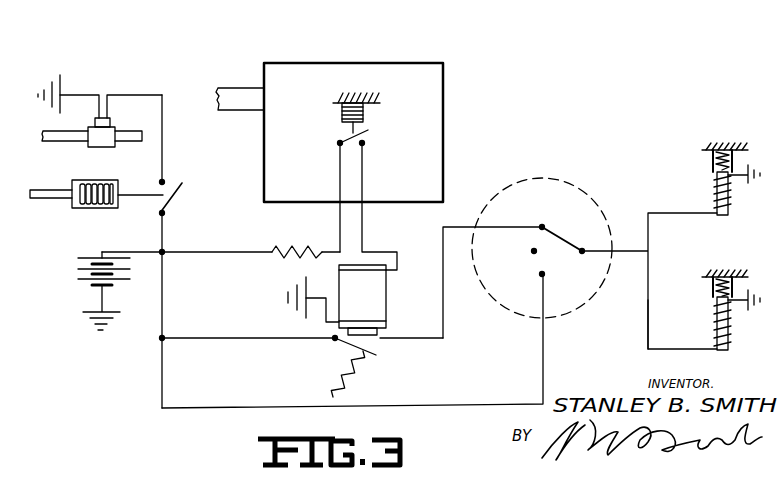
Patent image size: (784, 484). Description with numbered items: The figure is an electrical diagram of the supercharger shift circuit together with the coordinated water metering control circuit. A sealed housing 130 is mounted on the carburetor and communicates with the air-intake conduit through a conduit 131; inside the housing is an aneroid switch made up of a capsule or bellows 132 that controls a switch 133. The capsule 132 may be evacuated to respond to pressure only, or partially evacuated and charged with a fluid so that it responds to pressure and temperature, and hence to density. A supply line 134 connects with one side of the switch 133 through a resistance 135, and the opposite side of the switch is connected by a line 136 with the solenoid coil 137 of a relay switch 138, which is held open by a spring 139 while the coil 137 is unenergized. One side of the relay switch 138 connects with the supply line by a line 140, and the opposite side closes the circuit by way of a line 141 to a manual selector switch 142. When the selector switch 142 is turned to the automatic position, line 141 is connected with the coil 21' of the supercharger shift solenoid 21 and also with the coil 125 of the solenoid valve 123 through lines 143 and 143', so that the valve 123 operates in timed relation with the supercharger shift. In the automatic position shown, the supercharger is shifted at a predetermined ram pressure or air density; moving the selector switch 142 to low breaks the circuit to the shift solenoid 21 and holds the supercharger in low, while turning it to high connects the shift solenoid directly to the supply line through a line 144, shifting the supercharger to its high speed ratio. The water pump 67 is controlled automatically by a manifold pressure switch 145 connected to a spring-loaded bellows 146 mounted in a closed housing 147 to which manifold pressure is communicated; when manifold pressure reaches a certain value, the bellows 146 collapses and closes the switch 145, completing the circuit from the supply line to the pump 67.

The water pump 67 is at (98, 137).
The spring-loaded bellows 146 is at (97, 186).
The closed housing 147 is at (92, 208).
The manifold pressure switch 145 is at (180, 196).
The supply line 134 is at (209, 251).
The resistance 135 is at (311, 224).
The sealed housing 130 is at (443, 95).
The conduit 131 is at (233, 92).
The capsule or bellows 132 is at (363, 112).
The switch 133 is at (339, 141).
The line 136 is at (365, 173).
The solenoid coil 137 is at (386, 284).
The line 141 is at (443, 310).
The line 140 is at (240, 340).
The relay switch 138 is at (345, 345).
The spring 139 is at (363, 372).
The line 144 is at (490, 402).
The manual selector switch 142 is at (557, 233).
The line 143 is at (649, 267).
The line 143' is at (605, 324).
The supercharger shift solenoid 21 is at (711, 167).
The coil 21' is at (742, 193).
The solenoid valve 123 is at (708, 323).
The solenoid coil 125 is at (731, 338).